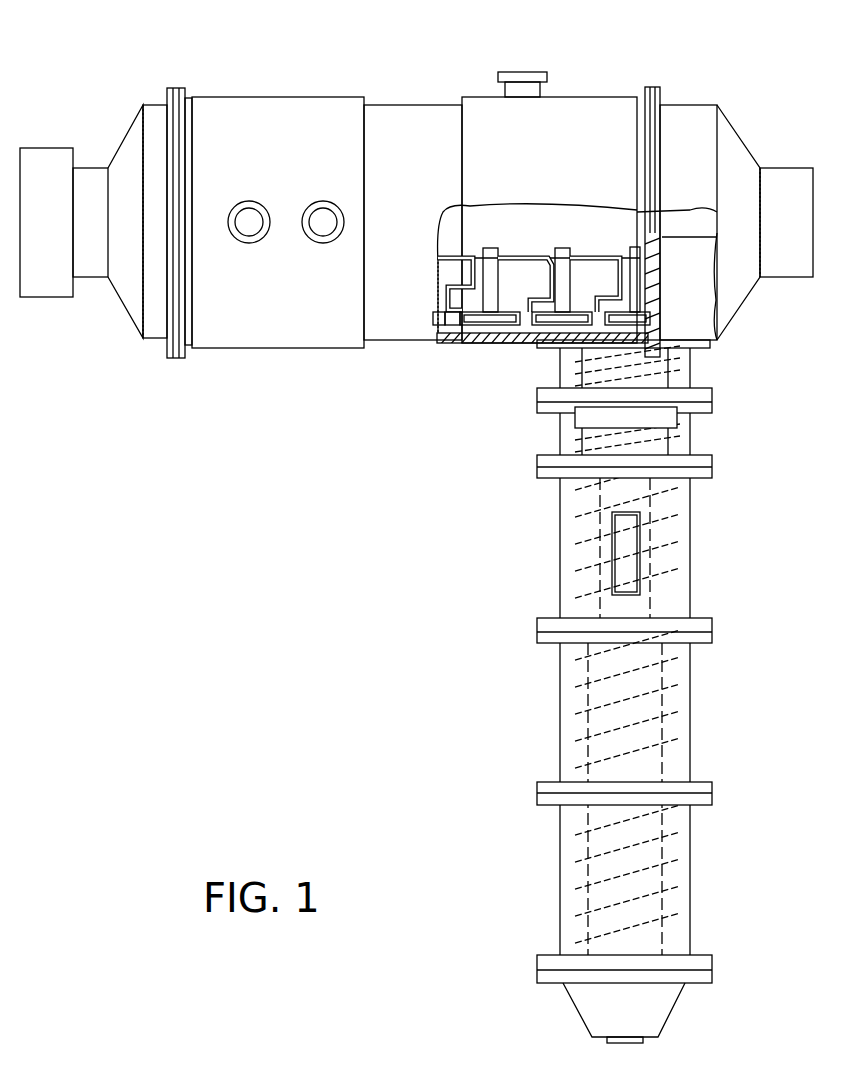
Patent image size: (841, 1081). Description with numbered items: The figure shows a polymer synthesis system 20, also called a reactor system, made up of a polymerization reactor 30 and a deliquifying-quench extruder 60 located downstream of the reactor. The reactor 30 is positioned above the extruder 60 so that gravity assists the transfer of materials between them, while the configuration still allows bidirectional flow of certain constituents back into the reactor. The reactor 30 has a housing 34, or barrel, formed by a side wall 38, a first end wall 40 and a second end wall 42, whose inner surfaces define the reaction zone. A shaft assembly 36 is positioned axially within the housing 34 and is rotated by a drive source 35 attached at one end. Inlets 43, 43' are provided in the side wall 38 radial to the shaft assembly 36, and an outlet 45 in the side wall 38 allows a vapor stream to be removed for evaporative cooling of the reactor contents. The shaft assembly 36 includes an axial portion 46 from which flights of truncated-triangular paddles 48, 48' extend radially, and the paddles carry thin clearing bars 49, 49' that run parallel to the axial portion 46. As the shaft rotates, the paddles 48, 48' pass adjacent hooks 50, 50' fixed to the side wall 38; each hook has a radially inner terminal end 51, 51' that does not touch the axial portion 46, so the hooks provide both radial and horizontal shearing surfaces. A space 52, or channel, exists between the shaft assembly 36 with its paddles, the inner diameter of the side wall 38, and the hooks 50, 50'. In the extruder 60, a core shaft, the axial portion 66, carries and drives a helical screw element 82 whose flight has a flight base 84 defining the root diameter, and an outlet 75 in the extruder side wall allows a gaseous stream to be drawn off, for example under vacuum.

The polymer synthesis system 20 is at (262, 526).
The polymerization reactor 30 is at (178, 60).
The housing 34 is at (580, 72).
The drive source 35 is at (50, 162).
The shaft assembly 36 is at (697, 225).
The side wall 38 is at (335, 103).
The first end wall 40 is at (165, 98).
The second end wall 42 is at (660, 100).
The inlet 43 is at (249, 303).
The inlet 43' is at (323, 303).
The outlet 45 is at (519, 74).
The axial portion 46 is at (503, 250).
The paddle 48 is at (565, 235).
The paddle 48' is at (420, 343).
The clearing bar 49 is at (602, 249).
The clearing bar 49' is at (465, 344).
The hook 50 is at (529, 230).
The hook 50' is at (441, 301).
The radially inner terminal end 51 is at (462, 230).
The radially inner terminal end 51' is at (439, 254).
The space 52 is at (497, 328).
The deliquifying-quench extruder 60 is at (428, 687).
The axial portion 66 is at (694, 430).
The outlet 75 is at (642, 549).
The screw element 82 is at (692, 364).
The flight base 84 is at (578, 430).